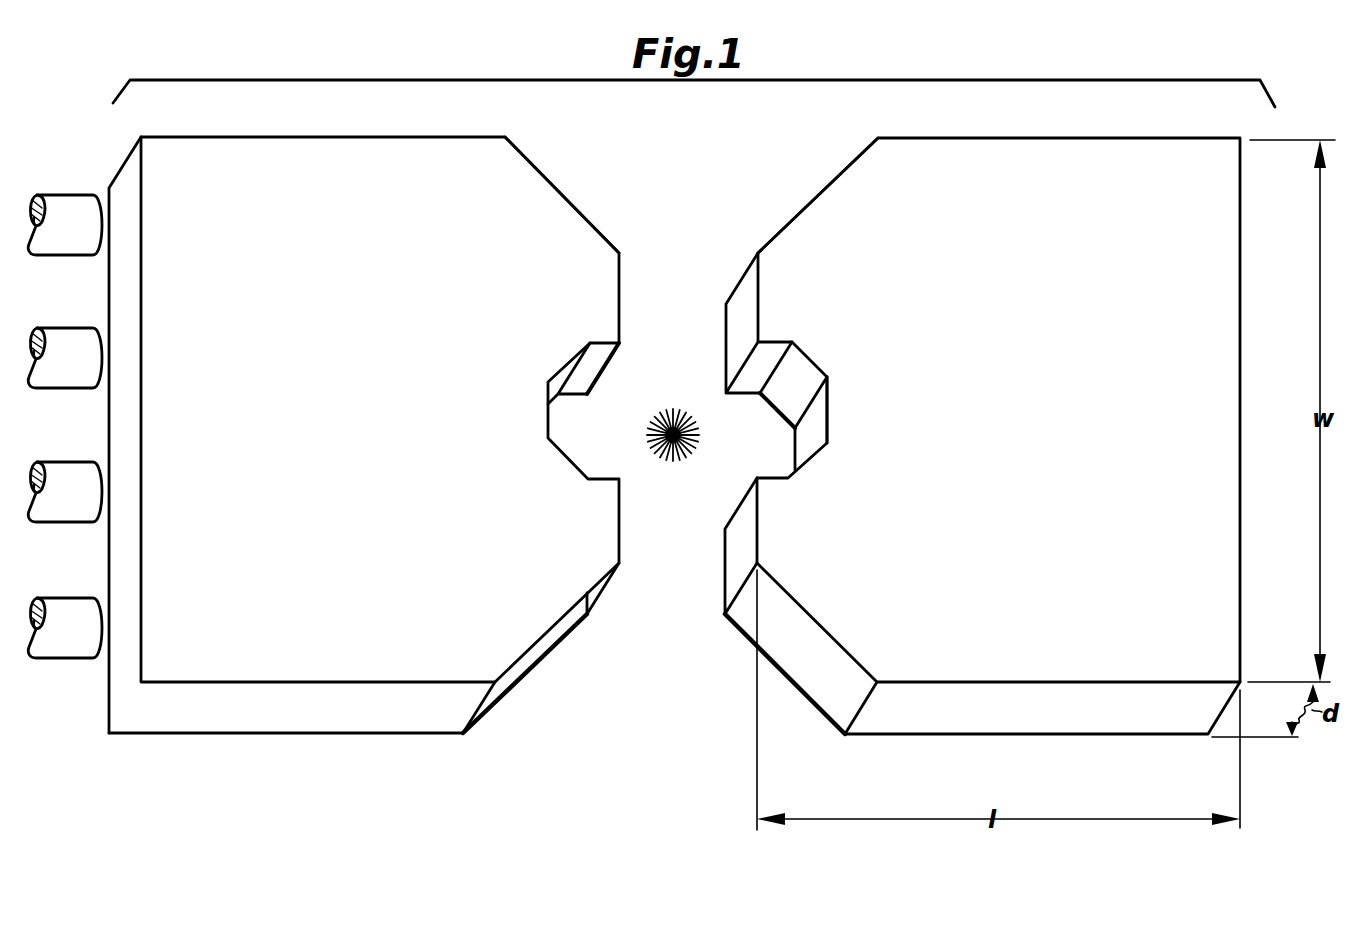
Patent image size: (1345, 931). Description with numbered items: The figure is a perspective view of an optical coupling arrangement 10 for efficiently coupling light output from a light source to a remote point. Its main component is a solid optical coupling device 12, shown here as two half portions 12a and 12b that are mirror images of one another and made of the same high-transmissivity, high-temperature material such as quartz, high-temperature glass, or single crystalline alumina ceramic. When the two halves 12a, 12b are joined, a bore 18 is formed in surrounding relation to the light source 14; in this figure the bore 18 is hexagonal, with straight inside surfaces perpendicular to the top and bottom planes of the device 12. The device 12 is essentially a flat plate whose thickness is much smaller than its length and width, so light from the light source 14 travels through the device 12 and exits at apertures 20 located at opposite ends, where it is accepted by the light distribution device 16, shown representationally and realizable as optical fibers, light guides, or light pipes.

The optical coupling arrangement 10 is at (649, 750).
The solid optical coupling device 12 is at (782, 224).
The first half portion 12a is at (251, 150).
The second half portion 12b is at (1019, 163).
The light source 14 is at (679, 405).
The light distribution device 16 is at (64, 352).
The bore 18 is at (757, 450).
The apertures 20 is at (126, 404).